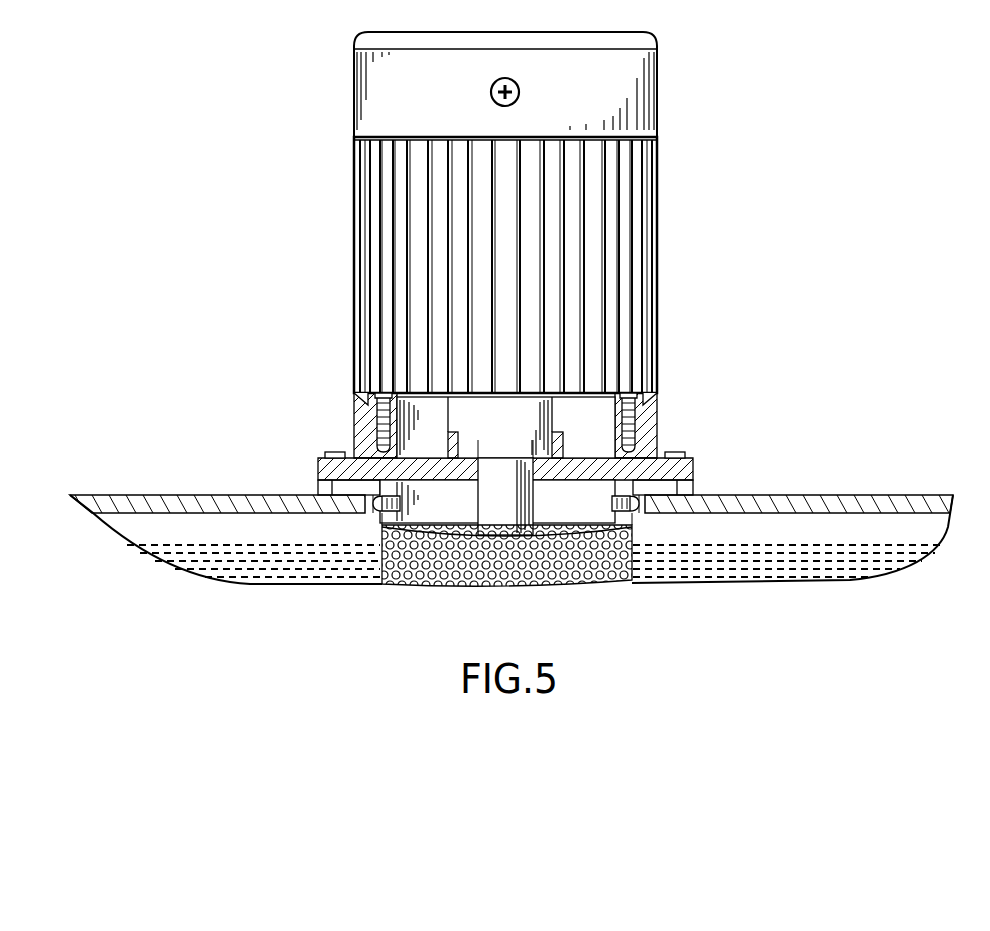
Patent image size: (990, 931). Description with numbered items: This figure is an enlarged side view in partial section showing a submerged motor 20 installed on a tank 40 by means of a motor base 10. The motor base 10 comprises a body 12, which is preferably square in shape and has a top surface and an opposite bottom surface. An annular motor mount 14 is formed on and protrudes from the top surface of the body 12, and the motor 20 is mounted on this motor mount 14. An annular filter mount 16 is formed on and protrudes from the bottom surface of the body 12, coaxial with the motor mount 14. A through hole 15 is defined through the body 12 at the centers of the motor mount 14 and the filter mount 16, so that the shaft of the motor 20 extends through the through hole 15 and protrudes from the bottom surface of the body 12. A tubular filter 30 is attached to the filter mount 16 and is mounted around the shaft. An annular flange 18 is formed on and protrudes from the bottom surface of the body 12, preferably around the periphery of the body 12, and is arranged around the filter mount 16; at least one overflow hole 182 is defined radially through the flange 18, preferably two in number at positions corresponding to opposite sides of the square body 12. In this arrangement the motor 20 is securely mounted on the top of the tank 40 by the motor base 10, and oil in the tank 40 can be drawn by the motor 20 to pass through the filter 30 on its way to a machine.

The motor 20 is at (640, 40).
The motor base 10 is at (662, 413).
The motor mount 14 is at (368, 430).
The through hole 15 is at (490, 458).
The body 12 is at (672, 452).
The overflow hole 182 is at (325, 485).
The flange 18 is at (697, 472).
The tank 40 is at (838, 505).
The filter mount 16 is at (625, 508).
The tubular filter 30 is at (547, 573).